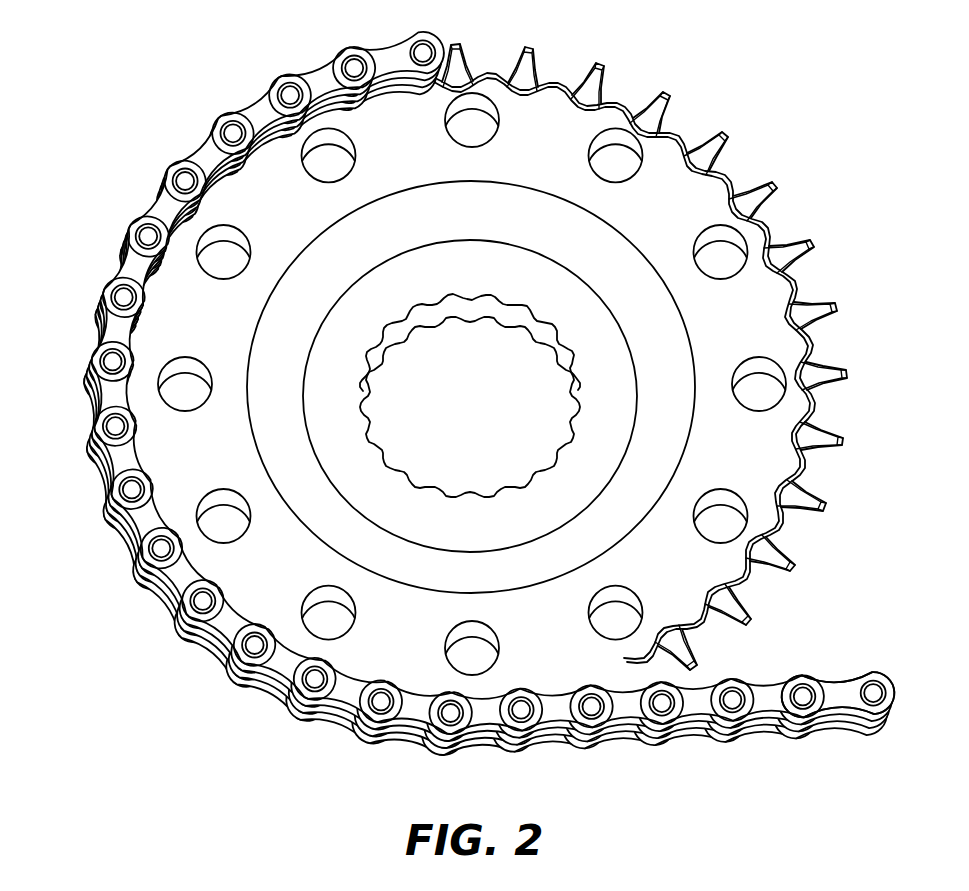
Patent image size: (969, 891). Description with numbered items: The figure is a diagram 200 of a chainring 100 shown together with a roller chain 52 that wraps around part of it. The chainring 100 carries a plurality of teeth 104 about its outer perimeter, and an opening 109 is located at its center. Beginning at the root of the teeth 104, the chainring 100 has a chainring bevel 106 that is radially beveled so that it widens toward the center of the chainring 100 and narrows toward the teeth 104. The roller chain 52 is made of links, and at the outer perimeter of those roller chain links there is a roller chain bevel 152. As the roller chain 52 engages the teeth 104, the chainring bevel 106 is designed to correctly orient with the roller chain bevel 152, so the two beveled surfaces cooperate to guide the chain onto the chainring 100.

The diagram 200 is at (477, 397).
The chainring 100 is at (478, 345).
The teeth 104 is at (810, 240).
The chainring bevel 106 is at (553, 83).
The opening 109 is at (496, 451).
The roller chain 52 is at (495, 404).
The roller chain bevel 152 is at (817, 675).